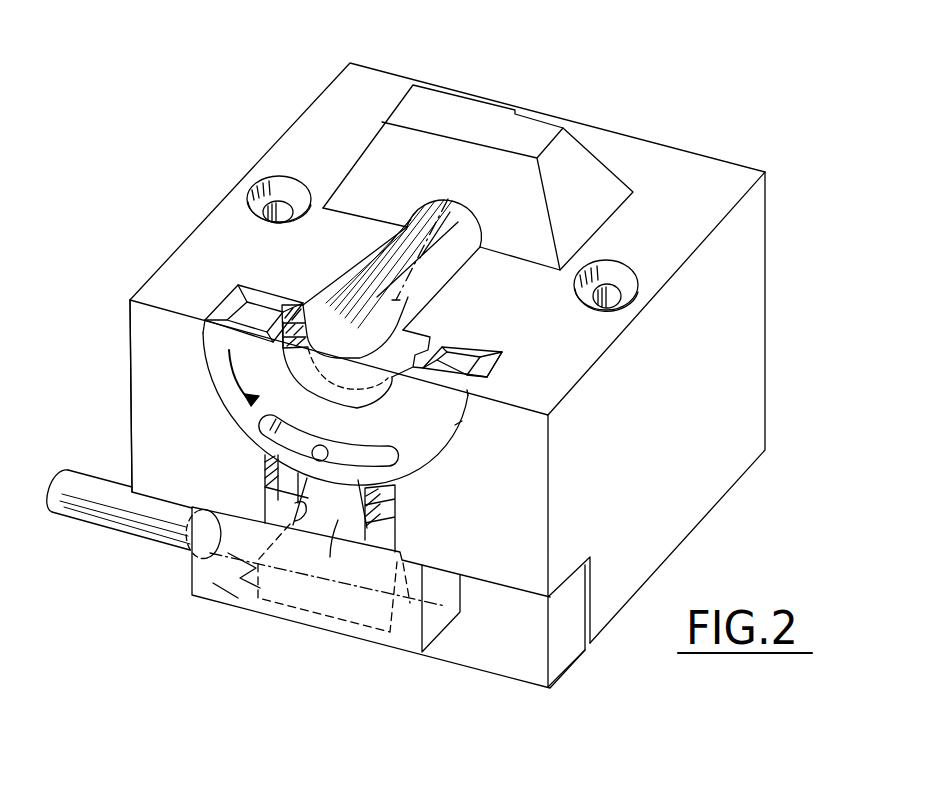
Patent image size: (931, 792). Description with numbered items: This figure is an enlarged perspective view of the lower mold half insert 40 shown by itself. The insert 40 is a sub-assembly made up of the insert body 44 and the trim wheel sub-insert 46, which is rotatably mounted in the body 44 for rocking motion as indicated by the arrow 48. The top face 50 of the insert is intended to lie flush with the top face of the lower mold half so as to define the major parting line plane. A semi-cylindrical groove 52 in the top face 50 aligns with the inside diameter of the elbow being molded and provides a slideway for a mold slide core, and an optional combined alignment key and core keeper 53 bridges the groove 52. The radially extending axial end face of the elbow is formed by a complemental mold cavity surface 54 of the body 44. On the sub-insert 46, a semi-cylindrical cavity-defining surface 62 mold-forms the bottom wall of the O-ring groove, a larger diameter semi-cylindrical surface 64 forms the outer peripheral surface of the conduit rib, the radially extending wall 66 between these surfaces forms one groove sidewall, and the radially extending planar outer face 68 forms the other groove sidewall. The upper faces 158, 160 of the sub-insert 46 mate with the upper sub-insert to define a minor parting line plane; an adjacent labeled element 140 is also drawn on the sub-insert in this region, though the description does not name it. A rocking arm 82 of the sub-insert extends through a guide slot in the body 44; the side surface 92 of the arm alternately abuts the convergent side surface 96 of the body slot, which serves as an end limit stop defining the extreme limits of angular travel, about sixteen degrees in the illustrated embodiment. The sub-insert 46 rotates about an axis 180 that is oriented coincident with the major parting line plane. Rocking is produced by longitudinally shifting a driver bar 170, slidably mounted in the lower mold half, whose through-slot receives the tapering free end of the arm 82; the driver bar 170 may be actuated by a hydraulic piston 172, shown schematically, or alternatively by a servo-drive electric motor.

The lower mold half insert 40 is at (262, 130).
The insert body 44 is at (132, 323).
The trim wheel sub-insert 46 is at (440, 457).
The arrow 48 is at (230, 347).
The top face 50 is at (697, 158).
The semi-cylindrical groove 52 is at (425, 215).
The combined alignment key and core keeper 53 is at (617, 187).
The mold cavity surface 54 is at (317, 300).
The semi-cylindrical cavity-defining surface 62 is at (300, 392).
The larger diameter semi-cylindrical surface 64 is at (308, 308).
The radially extending wall 66 is at (385, 405).
The radially extending planar outer face 68 is at (458, 425).
The rocking arm 82 is at (282, 577).
The side surface of rocking arm 92 is at (395, 500).
The convergent side surface of body slot 96 is at (265, 487).
The right square boss 140 is at (467, 353).
The upper face of lower sub-insert 158 is at (497, 358).
The upper face of lower sub-insert 160 is at (440, 338).
The driver bar 170 is at (262, 620).
The hydraulic piston 172 is at (130, 545).
The axis 180 is at (400, 300).